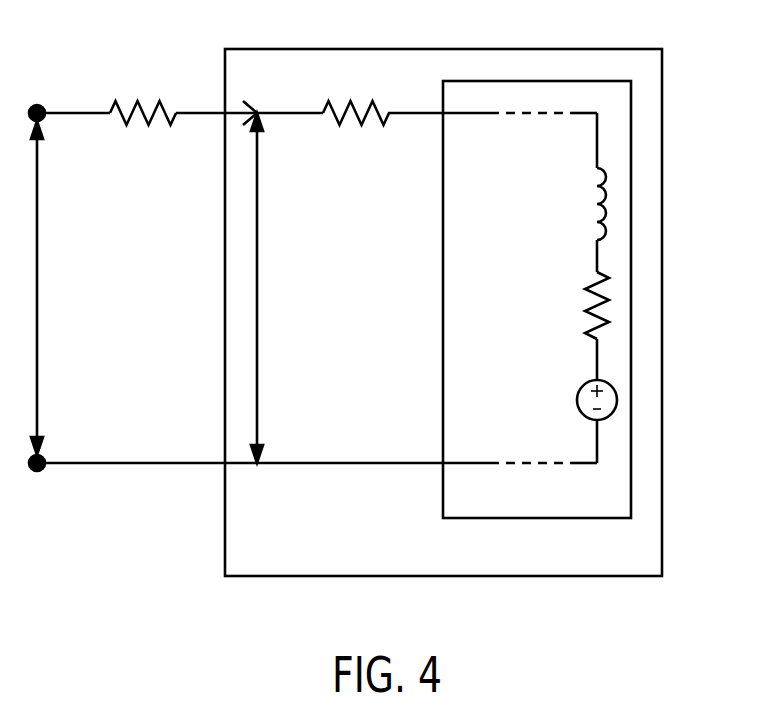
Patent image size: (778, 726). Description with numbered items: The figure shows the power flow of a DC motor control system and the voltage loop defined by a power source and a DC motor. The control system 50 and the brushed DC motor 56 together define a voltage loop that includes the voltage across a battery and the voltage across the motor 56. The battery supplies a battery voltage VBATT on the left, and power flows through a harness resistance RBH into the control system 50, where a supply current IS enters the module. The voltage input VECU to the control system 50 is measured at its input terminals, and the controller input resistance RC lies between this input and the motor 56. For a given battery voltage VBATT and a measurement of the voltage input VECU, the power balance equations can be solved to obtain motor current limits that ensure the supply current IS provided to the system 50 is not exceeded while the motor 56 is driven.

The control system 50 is at (237, 513).
The brushed DC motor 56 is at (622, 482).
The battery harness resistance RBH is at (143, 91).
The controller input resistance RC is at (356, 91).
The battery voltage VBATT is at (66, 288).
The voltage input VECU is at (283, 288).
The supply current IS is at (260, 100).